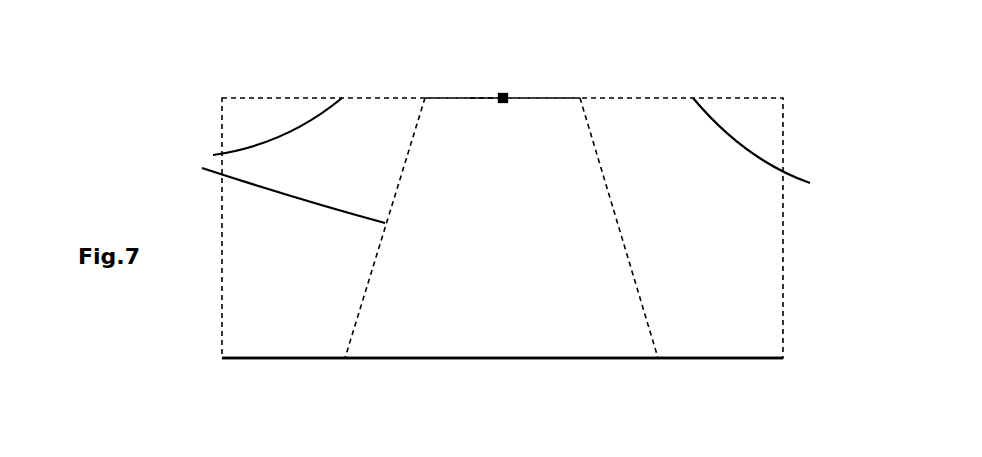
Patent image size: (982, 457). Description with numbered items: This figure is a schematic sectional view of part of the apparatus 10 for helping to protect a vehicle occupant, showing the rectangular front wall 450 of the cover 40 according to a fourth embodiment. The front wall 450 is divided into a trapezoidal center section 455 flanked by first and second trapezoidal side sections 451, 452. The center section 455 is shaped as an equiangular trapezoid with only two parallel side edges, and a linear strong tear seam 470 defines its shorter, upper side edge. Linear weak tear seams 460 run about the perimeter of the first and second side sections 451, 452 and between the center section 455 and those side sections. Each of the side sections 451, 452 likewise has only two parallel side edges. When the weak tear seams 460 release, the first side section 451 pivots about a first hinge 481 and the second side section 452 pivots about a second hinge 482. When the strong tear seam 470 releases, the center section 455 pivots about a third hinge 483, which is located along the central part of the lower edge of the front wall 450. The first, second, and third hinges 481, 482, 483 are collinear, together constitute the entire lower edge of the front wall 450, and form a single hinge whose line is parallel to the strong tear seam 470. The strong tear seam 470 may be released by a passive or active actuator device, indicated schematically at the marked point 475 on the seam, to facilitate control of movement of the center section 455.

The apparatus 10 is at (808, 73).
The cover 40 is at (836, 109).
The front wall 450 is at (188, 89).
The first side section 451 is at (313, 76).
The second side section 452 is at (656, 75).
The center section 455 is at (451, 72).
The weak tear seams 460 is at (222, 208).
The strong tear seam 470 is at (475, 98).
The center point 475 is at (503, 102).
The first hinge 481 is at (302, 358).
The second hinge 482 is at (727, 358).
The third hinge 483 is at (555, 358).